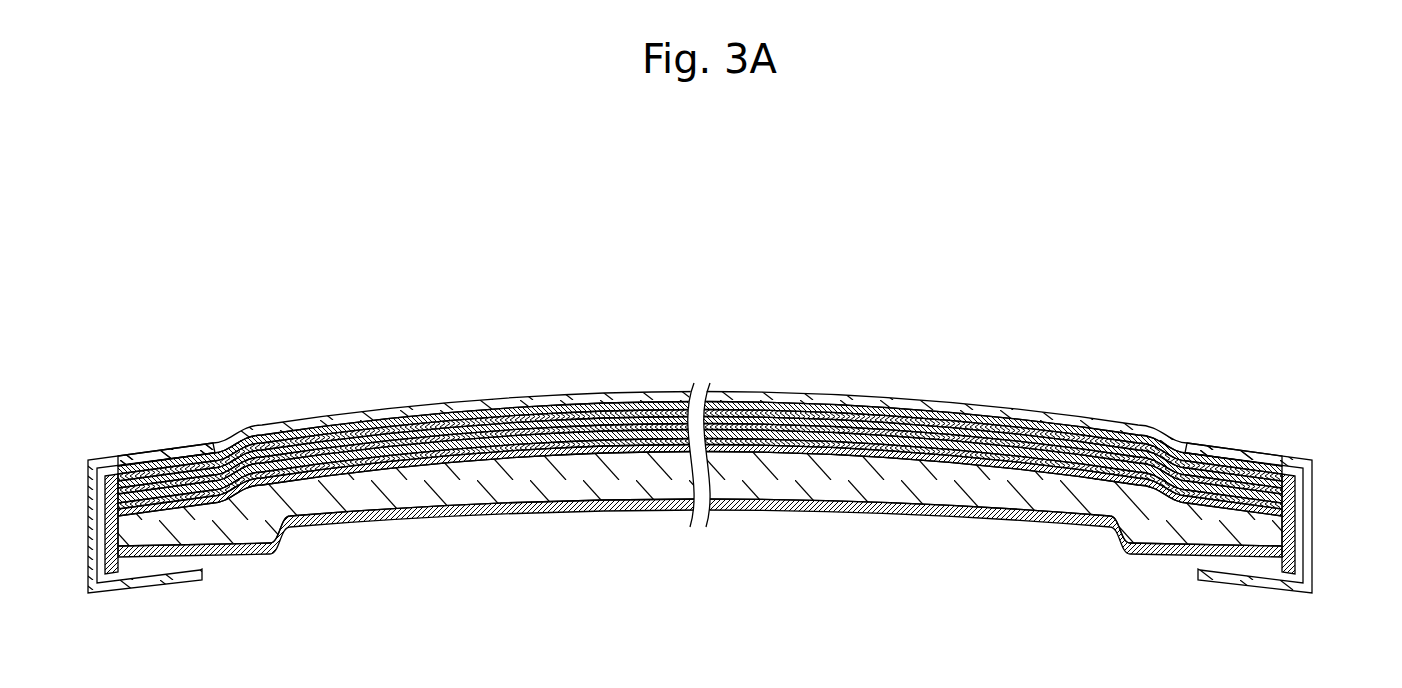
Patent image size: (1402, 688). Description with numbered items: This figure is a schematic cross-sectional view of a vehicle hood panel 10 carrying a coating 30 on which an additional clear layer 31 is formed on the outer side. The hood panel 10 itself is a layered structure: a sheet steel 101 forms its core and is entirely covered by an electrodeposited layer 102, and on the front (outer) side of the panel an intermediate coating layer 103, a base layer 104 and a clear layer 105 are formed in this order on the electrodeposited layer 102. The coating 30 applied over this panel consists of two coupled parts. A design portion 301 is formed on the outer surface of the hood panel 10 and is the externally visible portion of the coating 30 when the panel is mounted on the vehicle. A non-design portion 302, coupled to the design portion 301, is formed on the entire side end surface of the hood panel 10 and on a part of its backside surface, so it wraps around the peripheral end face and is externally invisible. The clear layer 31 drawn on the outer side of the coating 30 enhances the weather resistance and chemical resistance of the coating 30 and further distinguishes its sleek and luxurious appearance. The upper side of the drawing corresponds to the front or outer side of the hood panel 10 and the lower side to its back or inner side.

The hood panel 10 is at (700, 430).
The sheet steel 101 is at (870, 337).
The electrodeposited layer 102 is at (1047, 455).
The intermediate coating layer 103 is at (997, 448).
The base layer 104 is at (943, 440).
The clear layer 105 is at (885, 428).
The coating 30 is at (699, 463).
The clear layer 31 is at (772, 410).
The design portion 301 is at (557, 412).
The non-design portion 302 is at (104, 540).